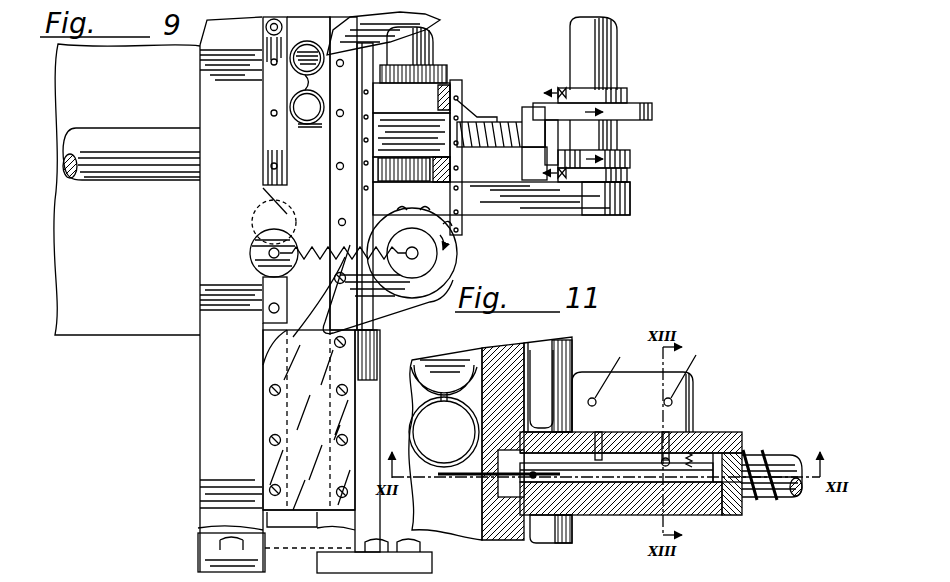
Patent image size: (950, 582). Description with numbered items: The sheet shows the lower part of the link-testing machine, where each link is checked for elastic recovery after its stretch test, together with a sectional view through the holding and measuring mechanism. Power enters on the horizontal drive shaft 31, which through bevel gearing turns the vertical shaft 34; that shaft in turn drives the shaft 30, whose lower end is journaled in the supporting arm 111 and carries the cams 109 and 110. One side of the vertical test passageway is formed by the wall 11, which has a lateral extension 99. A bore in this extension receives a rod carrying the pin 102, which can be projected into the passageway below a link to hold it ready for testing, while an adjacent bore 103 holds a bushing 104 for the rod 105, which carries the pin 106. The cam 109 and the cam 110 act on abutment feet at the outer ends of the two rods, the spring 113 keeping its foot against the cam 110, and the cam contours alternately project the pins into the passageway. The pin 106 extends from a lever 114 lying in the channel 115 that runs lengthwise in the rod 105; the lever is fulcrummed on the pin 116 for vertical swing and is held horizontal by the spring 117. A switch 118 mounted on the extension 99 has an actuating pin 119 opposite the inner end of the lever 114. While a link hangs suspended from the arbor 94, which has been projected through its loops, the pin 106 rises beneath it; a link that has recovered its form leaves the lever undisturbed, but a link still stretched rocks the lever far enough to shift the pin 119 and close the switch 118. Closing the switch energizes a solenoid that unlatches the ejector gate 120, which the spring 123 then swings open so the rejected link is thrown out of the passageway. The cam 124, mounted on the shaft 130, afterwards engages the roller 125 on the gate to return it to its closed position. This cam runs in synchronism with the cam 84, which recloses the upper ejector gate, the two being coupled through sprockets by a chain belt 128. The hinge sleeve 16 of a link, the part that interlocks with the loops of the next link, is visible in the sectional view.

In FIG. 9, the wall 11 is at (340, 150).
In FIG. 9, the hinge sleeve 16 is at (202, 456).
In FIG. 11, the hinge sleeve 16 is at (470, 450).
In FIG. 9, the shaft 30 is at (590, 57).
In FIG. 9, the drive shaft 31 is at (140, 158).
In FIG. 9, the vertical shaft 34 is at (413, 58).
In FIG. 9, the cam 84 is at (345, 35).
In FIG. 9, the arbor 94 is at (300, 57).
In FIG. 9, the lateral extension 99 is at (400, 135).
In FIG. 11, the lateral extension 99 is at (745, 440).
In FIG. 9, the pin 102 is at (313, 133).
In FIG. 11, the bore 103 is at (720, 515).
In FIG. 11, the bushing 104 is at (720, 513).
In FIG. 9, the rod 105 is at (503, 123).
In FIG. 11, the rod 105 is at (776, 460).
In FIG. 11, the pin 106 is at (458, 476).
In FIG. 9, the cam 109 is at (650, 107).
In FIG. 9, the cam 110 is at (632, 157).
In FIG. 9, the supporting arm 111 is at (584, 203).
In FIG. 11, the spring 113 is at (765, 452).
In FIG. 11, the lever 114 is at (628, 474).
In FIG. 11, the channel 115 is at (720, 450).
In FIG. 11, the pin 116 is at (533, 475).
In FIG. 11, the spring 117 is at (717, 458).
In FIG. 9, the switch 118 is at (418, 92).
In FIG. 11, the switch 118 is at (695, 390).
In FIG. 11, the actuating pin 119 is at (665, 440).
In FIG. 9, the ejector gate 120 is at (277, 289).
In FIG. 9, the spring 123 is at (313, 243).
In FIG. 9, the cam 124 is at (453, 262).
In FIG. 9, the roller 125 is at (253, 245).
In FIG. 9, the chain belt 128 is at (458, 230).
In FIG. 9, the shaft 130 is at (418, 256).